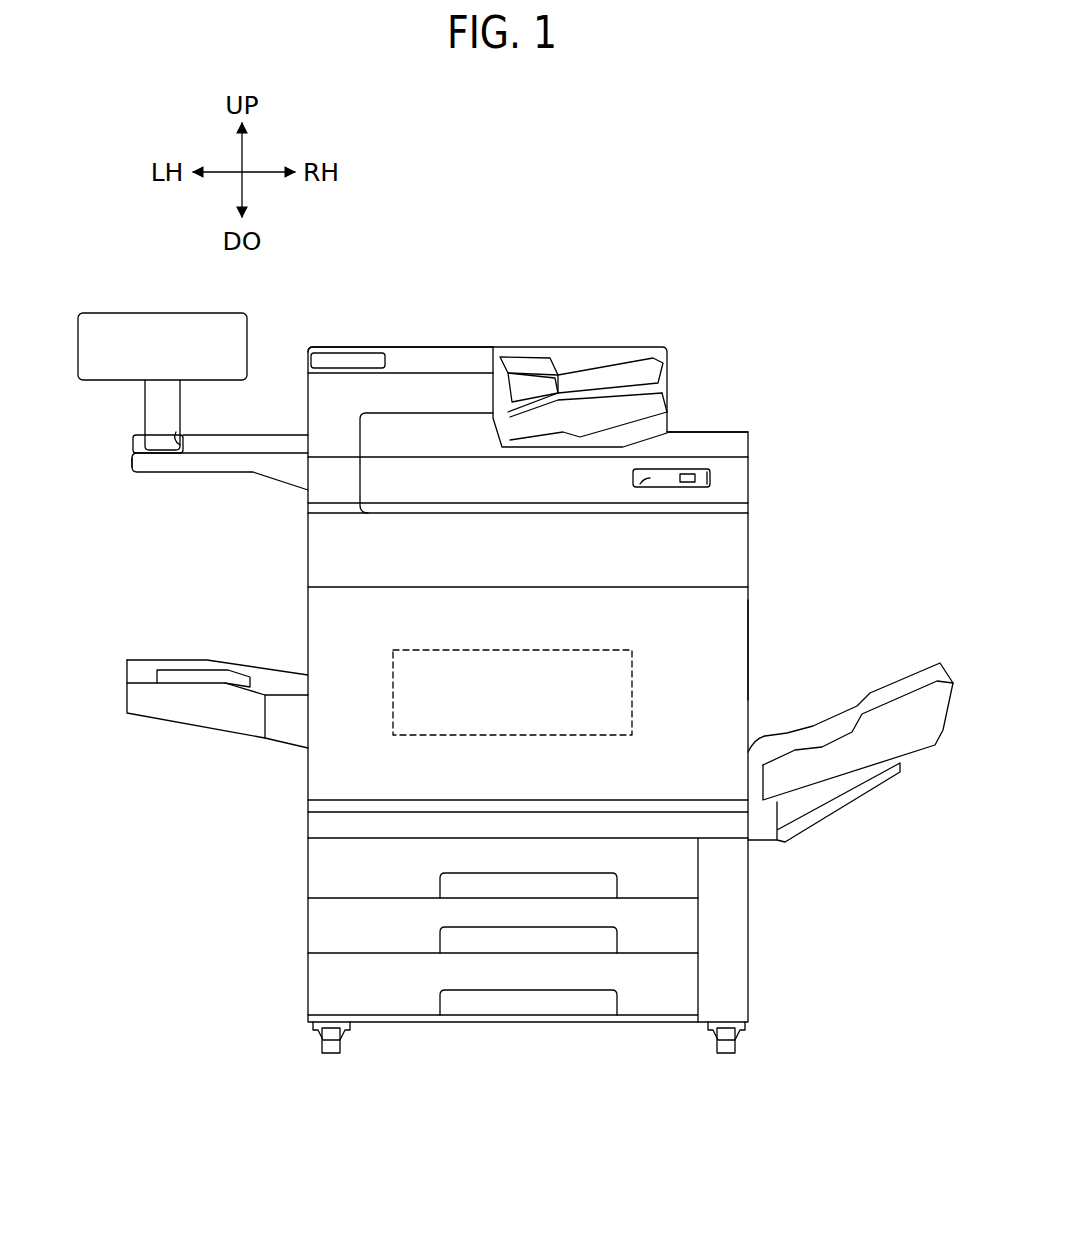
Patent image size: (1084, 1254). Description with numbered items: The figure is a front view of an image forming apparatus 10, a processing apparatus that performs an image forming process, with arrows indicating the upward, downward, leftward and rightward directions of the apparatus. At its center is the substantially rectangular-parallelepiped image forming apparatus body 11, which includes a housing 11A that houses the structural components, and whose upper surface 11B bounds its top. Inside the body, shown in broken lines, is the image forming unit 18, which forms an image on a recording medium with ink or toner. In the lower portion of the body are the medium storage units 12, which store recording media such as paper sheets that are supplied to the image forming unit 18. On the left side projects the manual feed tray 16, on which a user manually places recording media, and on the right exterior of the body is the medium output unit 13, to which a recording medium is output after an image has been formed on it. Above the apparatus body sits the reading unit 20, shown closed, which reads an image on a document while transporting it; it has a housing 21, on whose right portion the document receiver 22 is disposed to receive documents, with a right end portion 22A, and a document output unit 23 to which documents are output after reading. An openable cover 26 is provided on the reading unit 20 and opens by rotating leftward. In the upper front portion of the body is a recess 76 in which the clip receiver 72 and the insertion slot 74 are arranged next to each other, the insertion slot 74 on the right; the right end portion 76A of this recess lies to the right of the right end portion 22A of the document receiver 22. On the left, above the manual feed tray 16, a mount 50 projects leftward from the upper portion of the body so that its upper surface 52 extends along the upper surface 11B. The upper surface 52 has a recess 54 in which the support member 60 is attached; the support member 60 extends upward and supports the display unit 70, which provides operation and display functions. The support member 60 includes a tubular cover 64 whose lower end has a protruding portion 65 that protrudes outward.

The image forming apparatus 10 is at (768, 281).
The image forming apparatus body 11 is at (752, 607).
The housing 11A is at (752, 650).
The upper surface 11B is at (683, 432).
The medium storage unit 12 is at (305, 868).
The medium output unit 13 is at (918, 752).
The manual feed tray 16 is at (183, 730).
The image forming unit 18 is at (632, 692).
The reading unit 20 is at (453, 345).
The housing 21 is at (405, 347).
The document receiver 22 is at (593, 365).
The right end portion 22A is at (665, 350).
The document output unit 23 is at (660, 410).
The openable cover 26 is at (345, 360).
The mount 50 is at (243, 473).
The upper surface 52 is at (272, 435).
The recess 54 is at (178, 432).
The support member 60 is at (138, 400).
The cover 64 is at (152, 420).
The protruding portion 65 is at (130, 456).
The display unit 70 is at (78, 350).
The clip receiver 72 is at (647, 480).
The insertion slot 74 is at (700, 468).
The recess 76 is at (683, 476).
The right end portion 76A is at (712, 477).